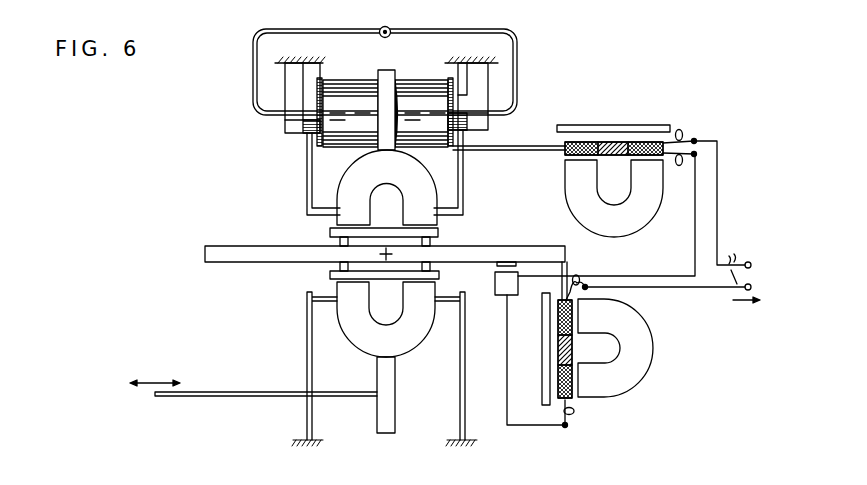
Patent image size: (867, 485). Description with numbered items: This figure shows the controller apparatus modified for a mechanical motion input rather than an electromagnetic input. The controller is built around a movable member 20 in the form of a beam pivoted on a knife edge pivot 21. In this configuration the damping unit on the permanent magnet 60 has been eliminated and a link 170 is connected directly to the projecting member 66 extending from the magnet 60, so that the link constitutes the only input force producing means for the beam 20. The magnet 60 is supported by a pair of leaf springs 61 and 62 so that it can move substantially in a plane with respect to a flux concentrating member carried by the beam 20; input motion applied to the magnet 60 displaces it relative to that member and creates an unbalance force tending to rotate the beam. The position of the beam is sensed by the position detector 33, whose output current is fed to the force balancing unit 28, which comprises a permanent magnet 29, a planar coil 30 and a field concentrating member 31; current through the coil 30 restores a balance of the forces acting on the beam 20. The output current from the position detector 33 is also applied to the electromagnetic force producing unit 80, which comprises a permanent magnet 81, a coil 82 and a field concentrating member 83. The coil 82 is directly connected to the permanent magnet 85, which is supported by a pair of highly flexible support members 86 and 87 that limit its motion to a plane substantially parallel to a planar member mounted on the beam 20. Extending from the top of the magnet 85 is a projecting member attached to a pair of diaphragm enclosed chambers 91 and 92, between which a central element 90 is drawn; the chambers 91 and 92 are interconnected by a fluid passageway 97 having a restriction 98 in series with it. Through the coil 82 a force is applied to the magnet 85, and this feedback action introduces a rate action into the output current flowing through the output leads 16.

The fluid passageway 97 is at (345, 31).
The restriction 98 is at (388, 28).
The diaphragm enclosed chamber 92 is at (348, 82).
The diaphragm enclosed chamber 91 is at (429, 82).
The disk 90 is at (385, 77).
The flexible support member 87 is at (307, 171).
The flexible support member 86 is at (464, 178).
The permanent magnet 85 is at (353, 176).
The movable member 20 is at (263, 253).
The knife edge pivot 21 is at (390, 252).
The permanent magnet 60 is at (364, 341).
The leaf spring 61 is at (307, 348).
The leaf spring 62 is at (465, 386).
The projecting member 66 is at (388, 416).
The link 170 is at (247, 392).
The position detector 33 is at (494, 296).
The output leads 16 is at (740, 266).
The electromagnetic force producing unit 80 is at (599, 156).
The field concentrating member 83 is at (598, 126).
The coil 82 is at (626, 142).
The permanent magnet 81 is at (575, 195).
The force balancing unit 28 is at (605, 361).
The field concentrating member 31 is at (543, 338).
The planar coil 30 is at (562, 355).
The permanent magnet 29 is at (640, 347).